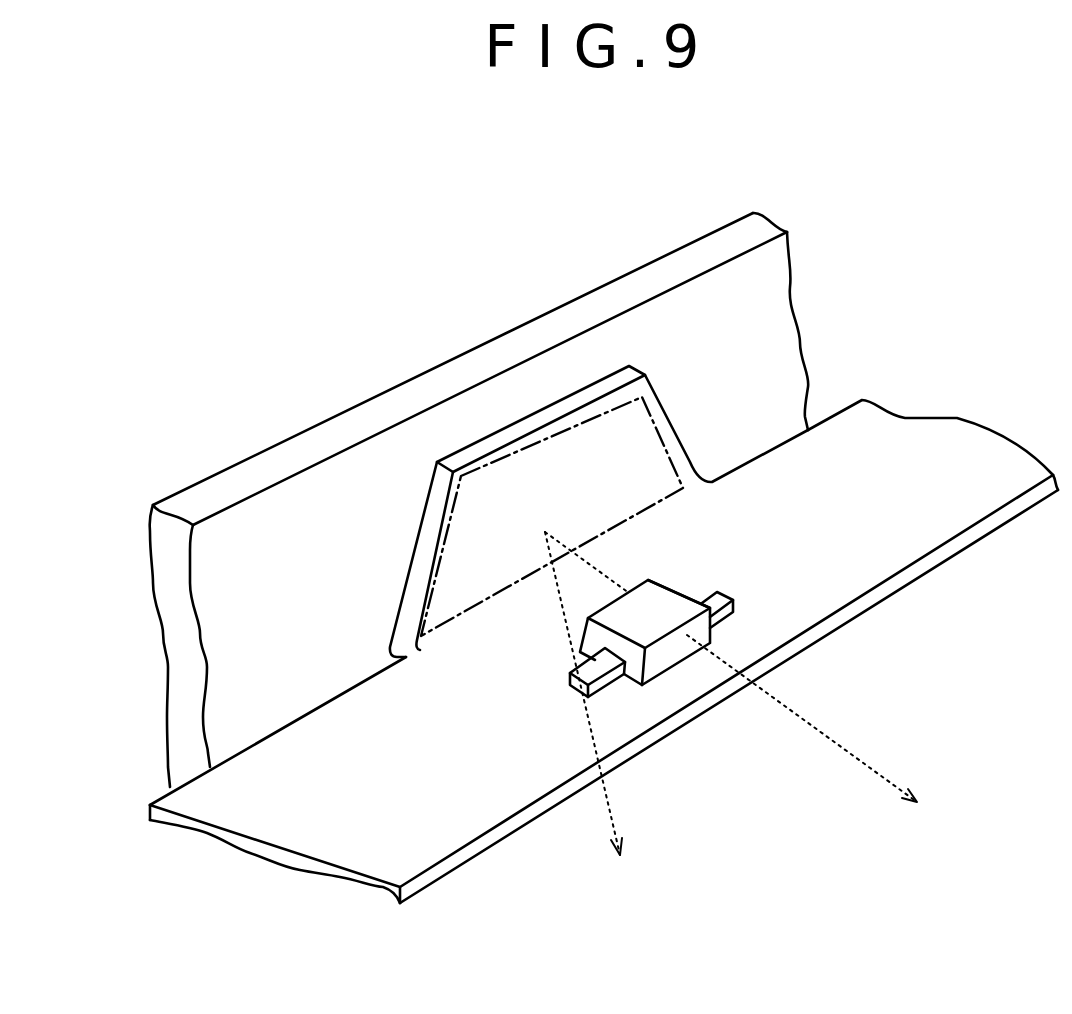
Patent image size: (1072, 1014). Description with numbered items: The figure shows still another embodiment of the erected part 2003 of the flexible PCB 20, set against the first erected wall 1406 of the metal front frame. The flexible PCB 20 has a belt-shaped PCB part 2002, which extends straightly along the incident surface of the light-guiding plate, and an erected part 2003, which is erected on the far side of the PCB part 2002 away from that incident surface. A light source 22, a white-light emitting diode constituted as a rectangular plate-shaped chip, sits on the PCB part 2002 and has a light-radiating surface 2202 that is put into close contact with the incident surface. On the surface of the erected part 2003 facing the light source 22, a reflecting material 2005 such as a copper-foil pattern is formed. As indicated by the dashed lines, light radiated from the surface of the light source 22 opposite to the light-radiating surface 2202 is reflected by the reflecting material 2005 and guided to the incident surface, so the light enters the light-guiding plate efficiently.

The flexible PCB 20 is at (604, 611).
The light source 22 is at (742, 694).
The first erected wall 1406 is at (603, 303).
The PCB part 2002 is at (462, 814).
The erected part 2003 is at (493, 440).
The reflecting material 2005 is at (482, 523).
The light-radiating surface 2202 is at (677, 650).